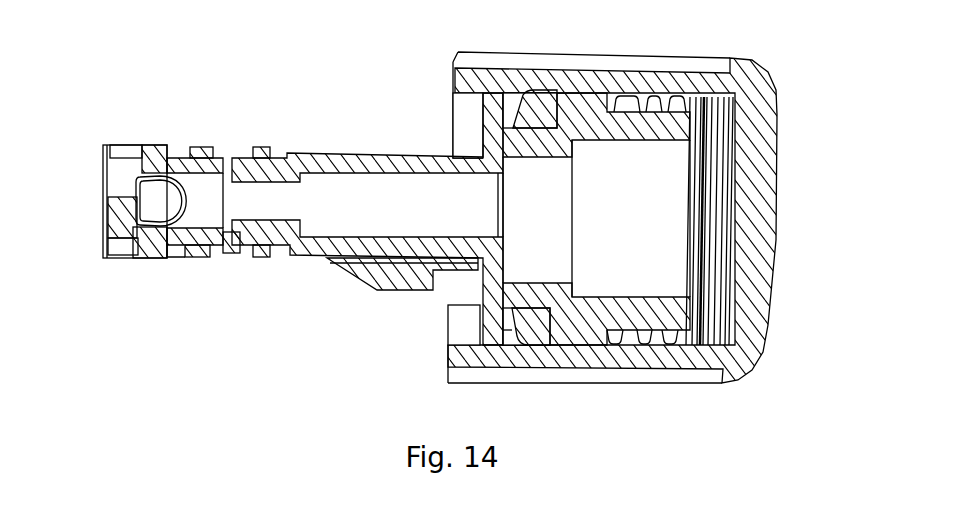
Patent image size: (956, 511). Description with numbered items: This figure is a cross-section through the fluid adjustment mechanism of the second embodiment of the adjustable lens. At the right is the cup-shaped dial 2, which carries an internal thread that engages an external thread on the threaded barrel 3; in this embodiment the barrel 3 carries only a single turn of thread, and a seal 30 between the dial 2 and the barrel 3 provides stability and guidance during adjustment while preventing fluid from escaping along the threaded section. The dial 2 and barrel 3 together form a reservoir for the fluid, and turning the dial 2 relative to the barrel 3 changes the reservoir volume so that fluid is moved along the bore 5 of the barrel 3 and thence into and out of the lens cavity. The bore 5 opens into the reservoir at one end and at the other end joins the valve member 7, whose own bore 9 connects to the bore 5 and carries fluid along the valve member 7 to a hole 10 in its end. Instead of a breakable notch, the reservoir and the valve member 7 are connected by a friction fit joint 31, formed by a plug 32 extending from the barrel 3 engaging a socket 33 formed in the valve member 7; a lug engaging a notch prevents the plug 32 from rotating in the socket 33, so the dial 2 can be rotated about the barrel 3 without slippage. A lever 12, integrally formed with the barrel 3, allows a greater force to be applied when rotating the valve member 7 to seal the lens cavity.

The dial 2 is at (758, 86).
The threaded barrel 3 is at (620, 314).
The bore 5 is at (393, 200).
The valve member 7 is at (152, 250).
The bore 9 is at (205, 195).
The hole 10 is at (118, 186).
The lever 12 is at (368, 280).
The seal 30 is at (545, 102).
The friction fit joint 31 is at (263, 167).
The plug 32 is at (253, 225).
The socket 33 is at (227, 235).